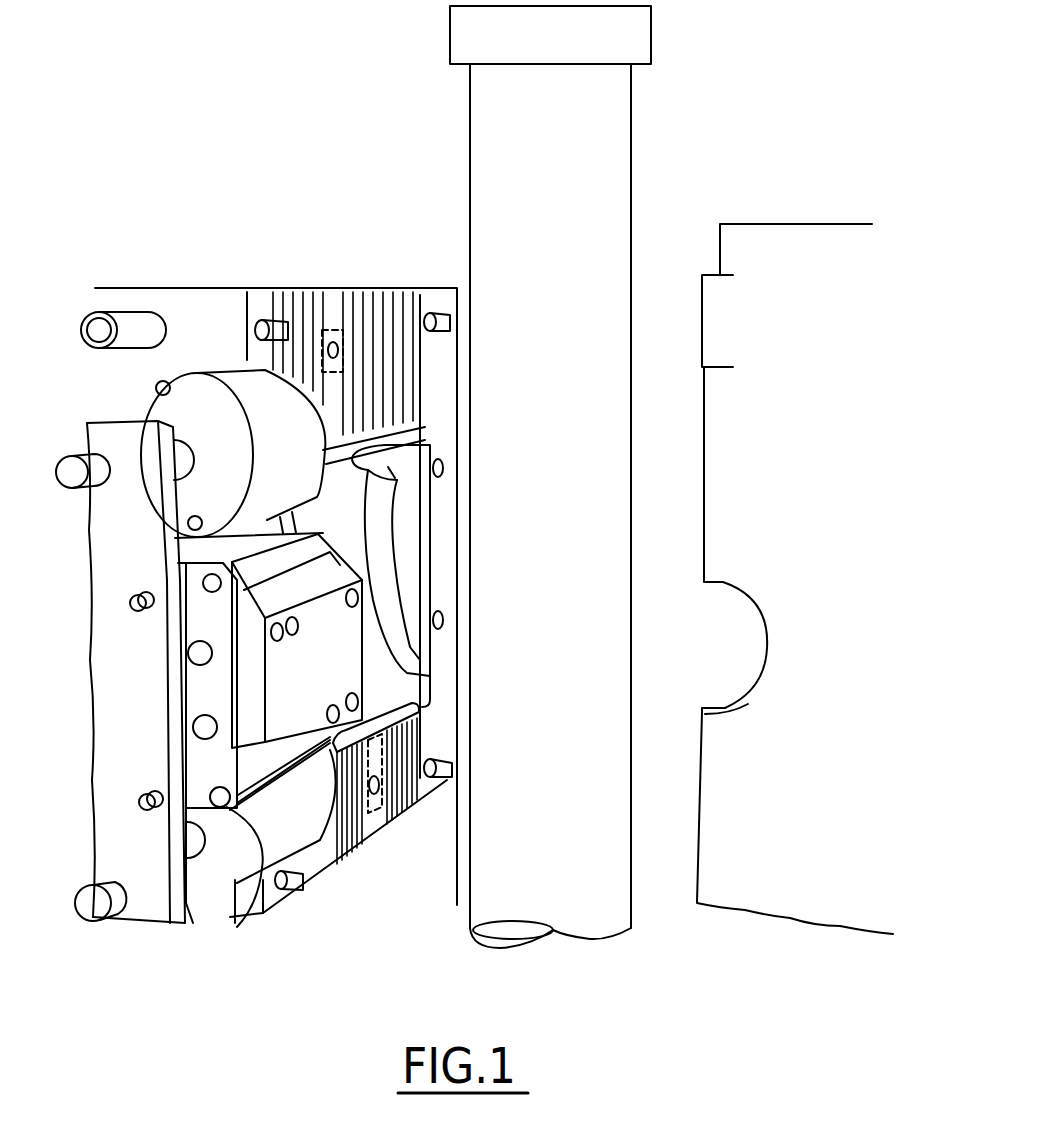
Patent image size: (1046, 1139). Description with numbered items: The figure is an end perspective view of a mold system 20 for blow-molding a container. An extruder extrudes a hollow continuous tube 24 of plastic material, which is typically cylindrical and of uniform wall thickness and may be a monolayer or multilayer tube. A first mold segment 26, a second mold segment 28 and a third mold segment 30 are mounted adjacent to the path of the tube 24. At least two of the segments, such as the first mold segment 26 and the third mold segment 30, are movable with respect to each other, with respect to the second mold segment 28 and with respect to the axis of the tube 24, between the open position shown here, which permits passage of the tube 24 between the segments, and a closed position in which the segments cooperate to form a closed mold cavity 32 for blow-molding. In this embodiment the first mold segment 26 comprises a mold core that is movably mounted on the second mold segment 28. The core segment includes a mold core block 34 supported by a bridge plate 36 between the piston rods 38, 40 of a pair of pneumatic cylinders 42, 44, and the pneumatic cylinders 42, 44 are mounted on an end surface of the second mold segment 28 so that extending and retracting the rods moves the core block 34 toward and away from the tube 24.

The mold system 20 is at (652, 42).
The hollow continuous tube 24 is at (487, 158).
The first mold segment 26 is at (223, 812).
The second mold segment 28 is at (197, 287).
The third mold segment 30 is at (789, 222).
The closed mold cavity 32 is at (430, 453).
The mold core block 34 is at (192, 690).
The bridge plate 36 is at (104, 566).
The piston rod 38 is at (79, 487).
The piston rod 40 is at (98, 921).
The pneumatic cylinder 42 is at (143, 405).
The pneumatic cylinder 44 is at (237, 883).